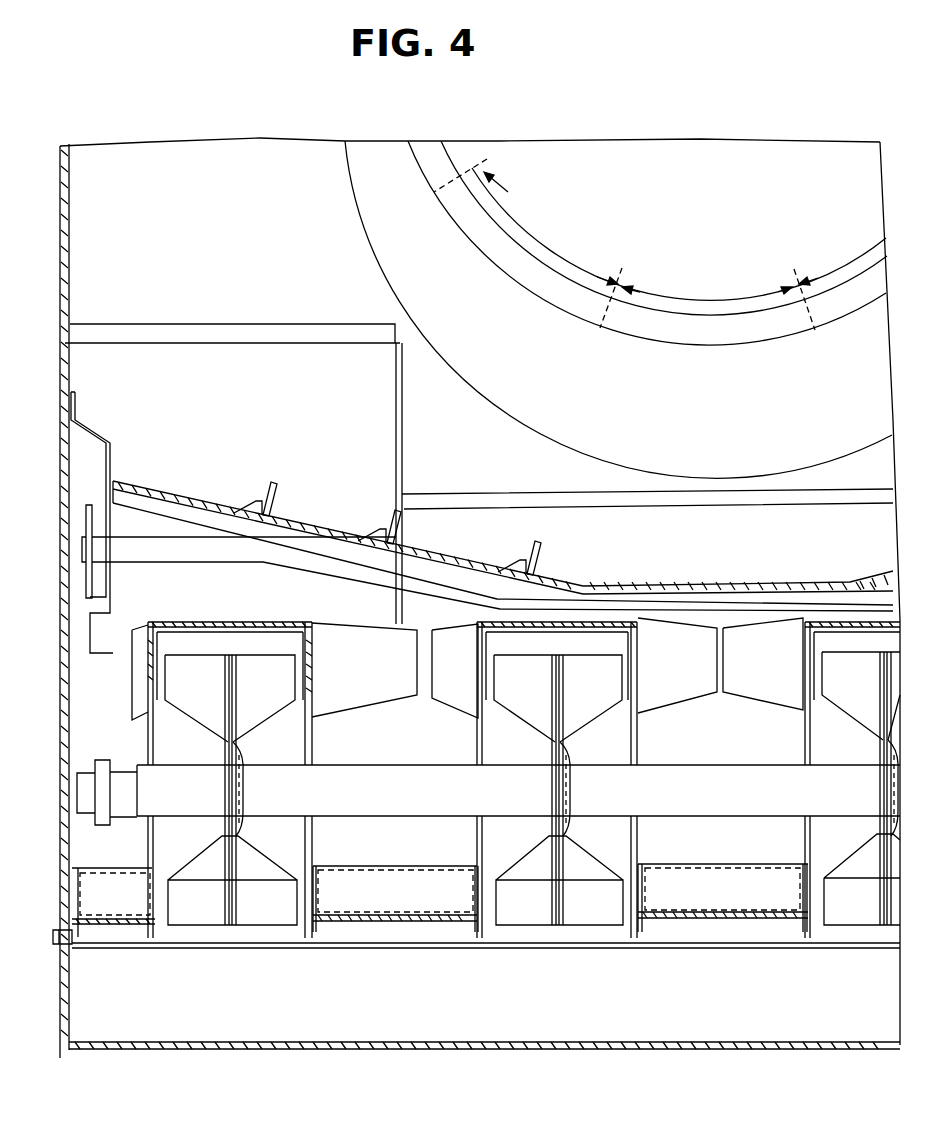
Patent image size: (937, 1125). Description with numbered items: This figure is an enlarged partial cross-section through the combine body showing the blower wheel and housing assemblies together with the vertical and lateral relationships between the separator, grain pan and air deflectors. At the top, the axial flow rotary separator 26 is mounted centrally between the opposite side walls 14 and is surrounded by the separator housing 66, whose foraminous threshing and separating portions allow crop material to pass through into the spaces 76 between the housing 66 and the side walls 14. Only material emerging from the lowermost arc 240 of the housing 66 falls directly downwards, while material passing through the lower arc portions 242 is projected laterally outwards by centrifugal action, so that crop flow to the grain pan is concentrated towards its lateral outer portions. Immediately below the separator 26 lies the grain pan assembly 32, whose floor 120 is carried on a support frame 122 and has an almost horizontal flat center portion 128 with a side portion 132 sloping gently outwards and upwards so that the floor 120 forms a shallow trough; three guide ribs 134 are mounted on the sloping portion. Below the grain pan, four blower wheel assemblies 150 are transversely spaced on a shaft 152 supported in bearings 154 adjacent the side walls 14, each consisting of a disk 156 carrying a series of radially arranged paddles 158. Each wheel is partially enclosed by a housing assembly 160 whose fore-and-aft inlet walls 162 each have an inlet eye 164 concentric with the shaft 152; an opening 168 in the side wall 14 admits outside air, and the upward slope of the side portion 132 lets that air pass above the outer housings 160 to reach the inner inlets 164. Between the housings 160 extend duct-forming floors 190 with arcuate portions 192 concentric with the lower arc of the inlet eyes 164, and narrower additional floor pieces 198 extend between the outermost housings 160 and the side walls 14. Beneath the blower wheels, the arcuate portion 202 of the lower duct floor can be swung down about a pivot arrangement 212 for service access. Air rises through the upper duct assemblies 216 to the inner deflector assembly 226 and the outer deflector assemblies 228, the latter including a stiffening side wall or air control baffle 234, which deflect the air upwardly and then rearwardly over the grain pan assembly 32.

The side walls 14 is at (60, 235).
The axial flow rotary separator 26 is at (652, 116).
The grain pan assembly 32 is at (599, 555).
The separator housing 66 is at (306, 172).
The spaces 76 is at (176, 237).
The grain pan floor 120 is at (624, 567).
The support frame 122 is at (152, 548).
The center portion 128 is at (750, 582).
The left-hand side portion 132 is at (145, 486).
The guide ribs 134 is at (262, 512).
The blower wheel assemblies 150 is at (285, 726).
The shaft 152 is at (398, 762).
The bearings 154 is at (105, 808).
The disk 156 is at (240, 745).
The paddles 158 is at (252, 656).
The housing assembly 160 is at (226, 751).
The inlet walls 162 is at (155, 648).
The inlet eye 164 is at (150, 670).
The opening 168 is at (62, 560).
The duct-forming floor 190 is at (404, 937).
The arcuate portion 192 is at (350, 915).
The additional floor pieces 198 is at (118, 936).
The arcuate portion 202 is at (255, 1050).
The pivot arrangement 212 is at (56, 932).
The upper duct assembly 216 is at (385, 625).
The inner deflector assembly 226 is at (455, 473).
The outer deflector assemblies 228 is at (252, 308).
The side wall or air control baffle 234 is at (396, 373).
The lowermost arc 240 is at (692, 298).
The lower arc portions 242 is at (540, 238).